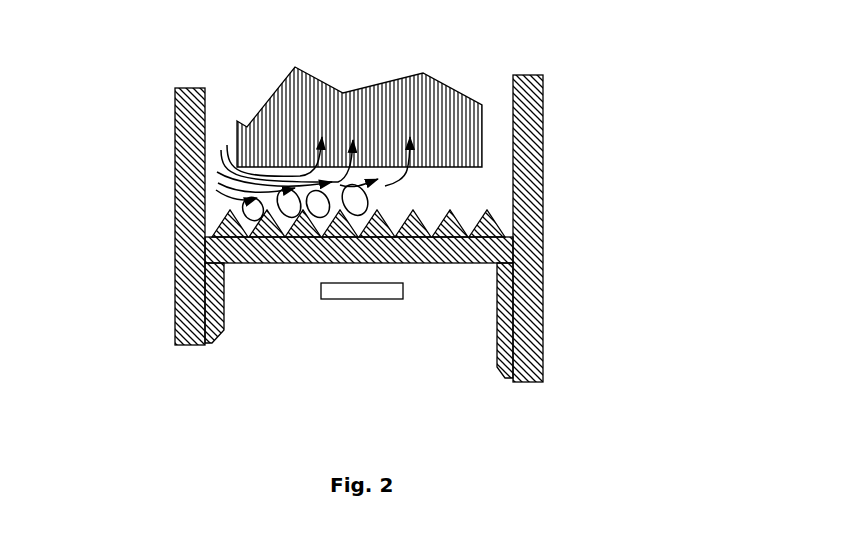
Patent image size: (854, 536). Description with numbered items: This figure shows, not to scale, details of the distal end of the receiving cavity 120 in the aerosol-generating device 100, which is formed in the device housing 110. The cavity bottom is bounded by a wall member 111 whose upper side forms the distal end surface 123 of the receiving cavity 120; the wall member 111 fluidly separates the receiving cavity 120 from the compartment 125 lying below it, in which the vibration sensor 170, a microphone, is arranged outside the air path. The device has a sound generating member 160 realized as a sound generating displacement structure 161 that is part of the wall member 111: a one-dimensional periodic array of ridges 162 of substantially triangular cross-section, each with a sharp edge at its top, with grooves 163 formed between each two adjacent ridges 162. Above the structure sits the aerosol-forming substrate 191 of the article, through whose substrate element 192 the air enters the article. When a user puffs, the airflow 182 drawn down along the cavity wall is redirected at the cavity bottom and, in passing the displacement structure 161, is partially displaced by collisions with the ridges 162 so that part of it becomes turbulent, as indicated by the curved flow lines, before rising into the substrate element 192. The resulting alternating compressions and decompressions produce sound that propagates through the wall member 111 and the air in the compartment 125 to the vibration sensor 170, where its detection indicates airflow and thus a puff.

The aerosol-generating device 100 is at (172, 118).
The device housing 110 is at (543, 92).
The receiving cavity 120 is at (220, 113).
The wall member 111 is at (230, 256).
The distal end surface 123 is at (205, 233).
The compartment 125 is at (275, 300).
The sound generating member 160 is at (477, 215).
The sound generating displacement structure 161 is at (503, 220).
The ridges 162 is at (347, 227).
The grooves 163 is at (330, 226).
The vibration sensor 170 is at (370, 296).
The airflow 182 is at (215, 180).
The aerosol-forming substrate 191 is at (383, 92).
The substrate element 192 is at (430, 95).